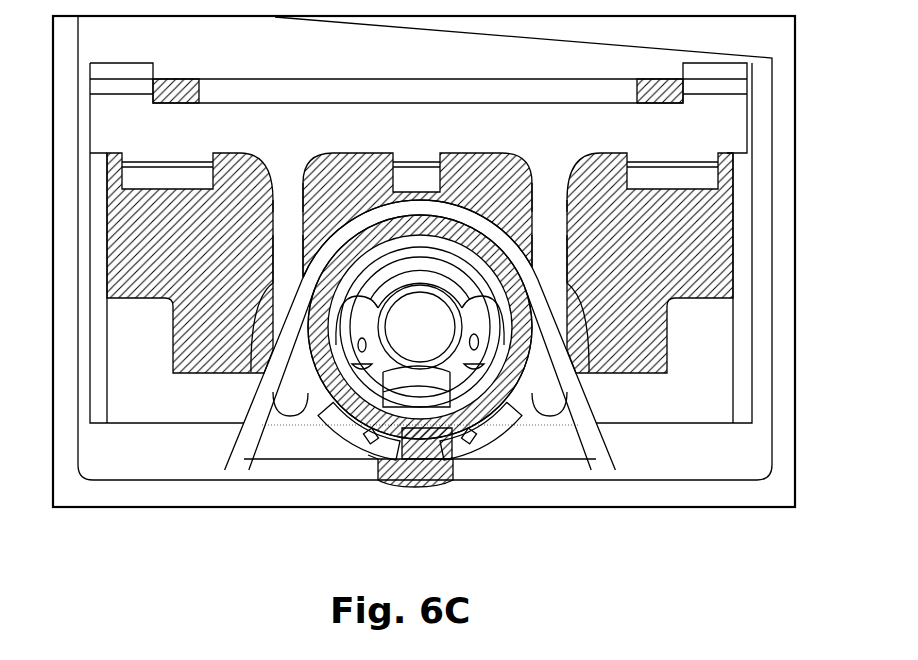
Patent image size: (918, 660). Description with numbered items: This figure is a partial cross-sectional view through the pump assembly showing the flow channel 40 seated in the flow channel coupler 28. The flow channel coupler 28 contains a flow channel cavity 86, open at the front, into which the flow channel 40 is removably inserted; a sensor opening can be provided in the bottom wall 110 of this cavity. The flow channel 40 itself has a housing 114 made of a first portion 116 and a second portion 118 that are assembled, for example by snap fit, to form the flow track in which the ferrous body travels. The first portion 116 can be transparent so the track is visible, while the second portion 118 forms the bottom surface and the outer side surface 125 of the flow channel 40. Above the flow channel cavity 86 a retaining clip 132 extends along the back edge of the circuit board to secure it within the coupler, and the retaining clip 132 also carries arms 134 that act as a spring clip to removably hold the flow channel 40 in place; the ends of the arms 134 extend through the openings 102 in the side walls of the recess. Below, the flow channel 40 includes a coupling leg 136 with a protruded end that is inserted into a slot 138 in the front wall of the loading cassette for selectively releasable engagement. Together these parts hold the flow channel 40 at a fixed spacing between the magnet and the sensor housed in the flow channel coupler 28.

The flow channel coupler 28 is at (710, 458).
The flow channel 40 is at (415, 398).
The flow channel cavity 86 is at (566, 470).
The slots 102 is at (245, 462).
The bottom wall 110 is at (276, 443).
The housing 114 is at (485, 411).
The first portion 116 is at (507, 418).
The second portion 118 is at (333, 418).
The outer side surface 125 is at (552, 445).
The retaining clip 132 is at (526, 137).
The arms 134 is at (303, 232).
The coupling leg 136 is at (427, 470).
The slot 138 is at (373, 460).